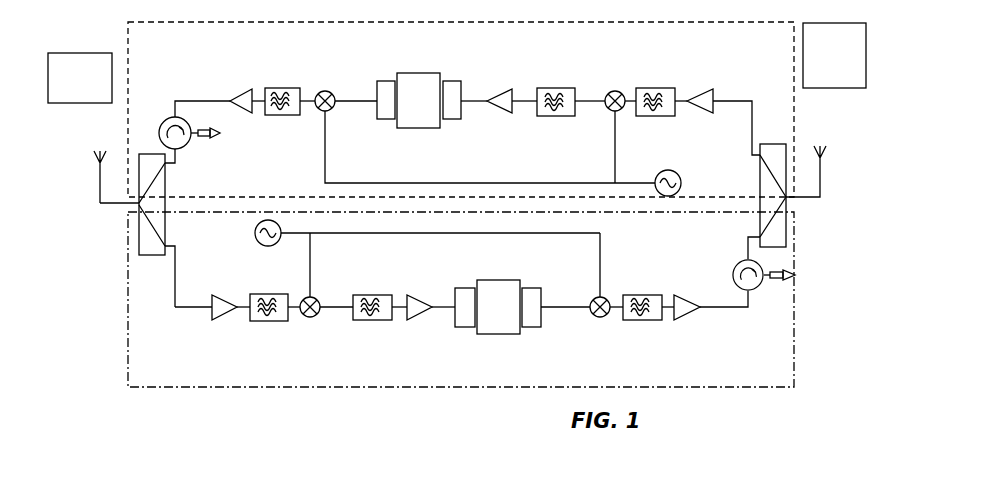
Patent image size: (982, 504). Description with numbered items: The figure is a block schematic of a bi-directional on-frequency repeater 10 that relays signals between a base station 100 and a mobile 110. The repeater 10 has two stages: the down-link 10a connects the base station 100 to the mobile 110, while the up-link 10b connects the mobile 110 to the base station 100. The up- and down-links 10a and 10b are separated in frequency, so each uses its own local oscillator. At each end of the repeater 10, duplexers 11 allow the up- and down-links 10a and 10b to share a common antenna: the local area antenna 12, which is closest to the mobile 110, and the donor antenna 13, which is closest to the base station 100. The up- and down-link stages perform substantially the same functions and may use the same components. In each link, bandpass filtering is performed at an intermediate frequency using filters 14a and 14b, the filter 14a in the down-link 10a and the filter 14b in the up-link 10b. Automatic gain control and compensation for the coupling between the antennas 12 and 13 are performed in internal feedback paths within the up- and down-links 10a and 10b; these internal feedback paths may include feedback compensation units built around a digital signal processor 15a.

The repeater 10 is at (280, 404).
The down-link 10a is at (467, 112).
The up-link 10b is at (496, 291).
The duplexer 11 is at (140, 208).
The local area antenna 12 is at (98, 162).
The donor antenna 13 is at (826, 152).
The filter 14a is at (556, 116).
The filter 14b is at (368, 294).
The digital signal processor 15a is at (419, 128).
The base station 100 is at (849, 51).
The mobile 110 is at (94, 81).